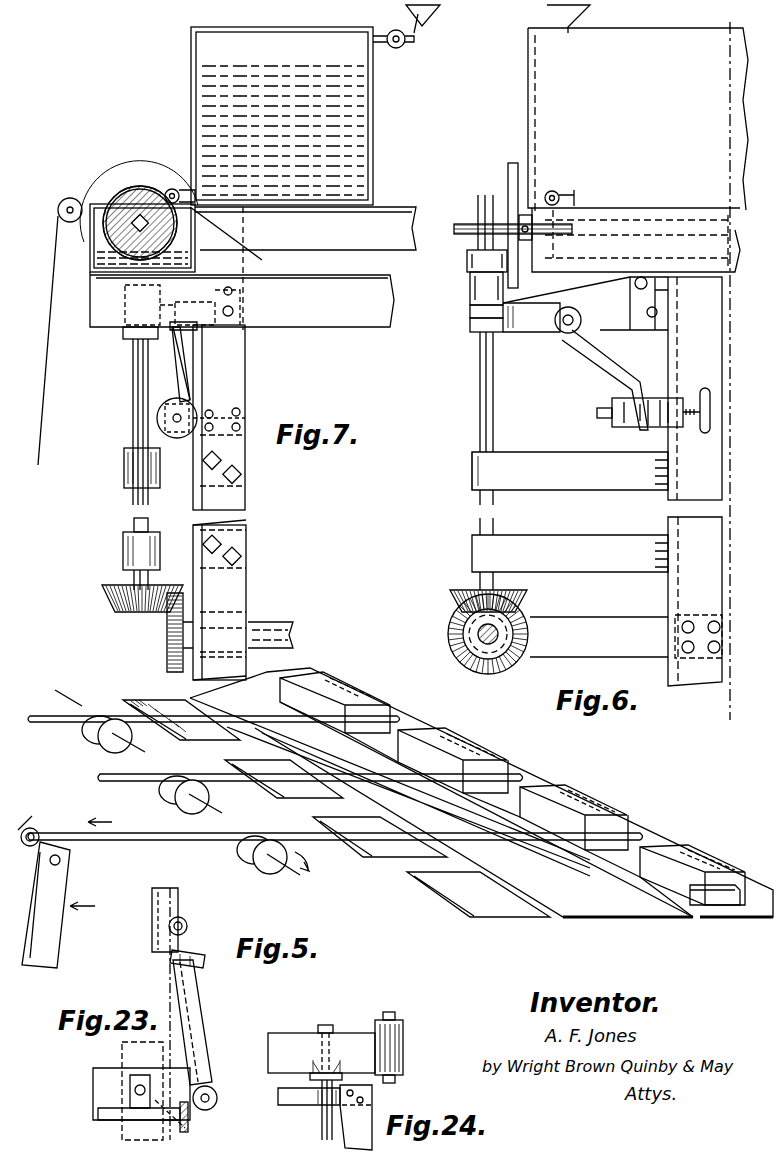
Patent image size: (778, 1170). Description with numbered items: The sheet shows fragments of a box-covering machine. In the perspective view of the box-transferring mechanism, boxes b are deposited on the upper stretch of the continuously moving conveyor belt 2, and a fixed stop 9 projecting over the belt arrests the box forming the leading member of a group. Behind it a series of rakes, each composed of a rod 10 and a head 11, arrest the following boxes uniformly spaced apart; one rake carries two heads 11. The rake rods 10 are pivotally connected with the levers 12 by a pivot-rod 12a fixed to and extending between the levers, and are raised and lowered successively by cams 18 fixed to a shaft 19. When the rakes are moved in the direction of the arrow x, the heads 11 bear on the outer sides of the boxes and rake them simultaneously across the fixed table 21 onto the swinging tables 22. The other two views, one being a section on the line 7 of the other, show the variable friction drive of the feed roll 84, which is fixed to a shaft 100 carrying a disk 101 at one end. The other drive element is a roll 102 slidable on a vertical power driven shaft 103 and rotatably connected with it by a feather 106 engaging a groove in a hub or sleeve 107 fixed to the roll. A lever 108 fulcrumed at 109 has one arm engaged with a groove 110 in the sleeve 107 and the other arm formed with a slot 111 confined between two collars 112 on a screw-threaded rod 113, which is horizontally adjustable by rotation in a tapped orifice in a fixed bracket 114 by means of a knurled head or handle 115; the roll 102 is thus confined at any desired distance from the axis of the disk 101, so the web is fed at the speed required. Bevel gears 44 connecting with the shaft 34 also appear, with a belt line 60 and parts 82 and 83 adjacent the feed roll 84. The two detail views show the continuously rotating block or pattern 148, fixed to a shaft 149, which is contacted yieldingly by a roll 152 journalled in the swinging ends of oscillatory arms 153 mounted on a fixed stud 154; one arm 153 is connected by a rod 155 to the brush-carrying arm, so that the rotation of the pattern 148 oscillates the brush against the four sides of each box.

In FIG. 5, the conveyor belt 2 is at (760, 918).
In FIG. 5, the fixed stop 9 is at (722, 900).
In FIG. 5, the rake rod 10 is at (301, 720).
In FIG. 5, the rake head 11 is at (392, 710).
In FIG. 5, the box b is at (290, 693).
In FIG. 5, the lever 12 is at (55, 940).
In FIG. 5, the pivot-rod 12a is at (30, 826).
In FIG. 5, the cam 18 is at (108, 742).
In FIG. 5, the shaft 19 is at (298, 872).
In FIG. 5, the fixed table 21 is at (618, 918).
In FIG. 5, the swinging table 22 is at (207, 738).
In FIG. 5, the arrow x is at (102, 815).
In FIG. 7, the shaft 34 is at (277, 632).
In FIG. 6, the shaft 34 is at (468, 634).
In FIG. 7, the bevel gears 44 is at (127, 607).
In FIG. 6, the bevel gears 44 is at (456, 612).
In FIG. 7, the belt 60 is at (44, 372).
In FIG. 7, the pulley 82 is at (62, 203).
In FIG. 7, the housing 83 is at (92, 264).
In FIG. 6, the housing 83 is at (725, 270).
In FIG. 7, the feed roll 84 is at (120, 200).
In FIG. 7, the shaft 100 is at (141, 222).
In FIG. 6, the shaft 100 is at (523, 215).
In FIG. 7, the disk 101 is at (134, 166).
In FIG. 6, the disk 101 is at (508, 176).
In FIG. 7, the roll 102 is at (215, 238).
In FIG. 6, the roll 102 is at (467, 262).
In FIG. 7, the vertical power driven shaft 103 is at (137, 372).
In FIG. 6, the vertical power driven shaft 103 is at (480, 380).
In FIG. 6, the feather 106 is at (478, 219).
In FIG. 7, the hub or sleeve 107 is at (125, 300).
In FIG. 6, the hub or sleeve 107 is at (474, 296).
In FIG. 7, the lever 108 is at (186, 364).
In FIG. 6, the lever 108 is at (598, 340).
In FIG. 6, the fulcrum 109 is at (565, 328).
In FIG. 6, the groove 110 is at (474, 318).
In FIG. 7, the slot 111 is at (182, 400).
In FIG. 6, the collars 112 is at (656, 418).
In FIG. 6, the screw-threaded rod 113 is at (666, 408).
In FIG. 6, the fixed bracket 114 is at (678, 426).
In FIG. 7, the knurled head or handle 115 is at (206, 420).
In FIG. 6, the knurled head or handle 115 is at (712, 412).
In FIG. 6, the section line 7 is at (723, 370).
In FIG. 23, the block or pattern 148 is at (122, 1053).
In FIG. 24, the block or pattern 148 is at (292, 1040).
In FIG. 23, the shaft 149 is at (135, 1092).
In FIG. 24, the shaft 149 is at (322, 1126).
In FIG. 23, the roll 152 is at (213, 1106).
In FIG. 24, the roll 152 is at (405, 1052).
In FIG. 23, the oscillatory arms 153 is at (196, 1022).
In FIG. 24, the oscillatory arms 153 is at (392, 1012).
In FIG. 23, the fixed stud 154 is at (188, 924).
In FIG. 23, the rod 155 is at (200, 966).